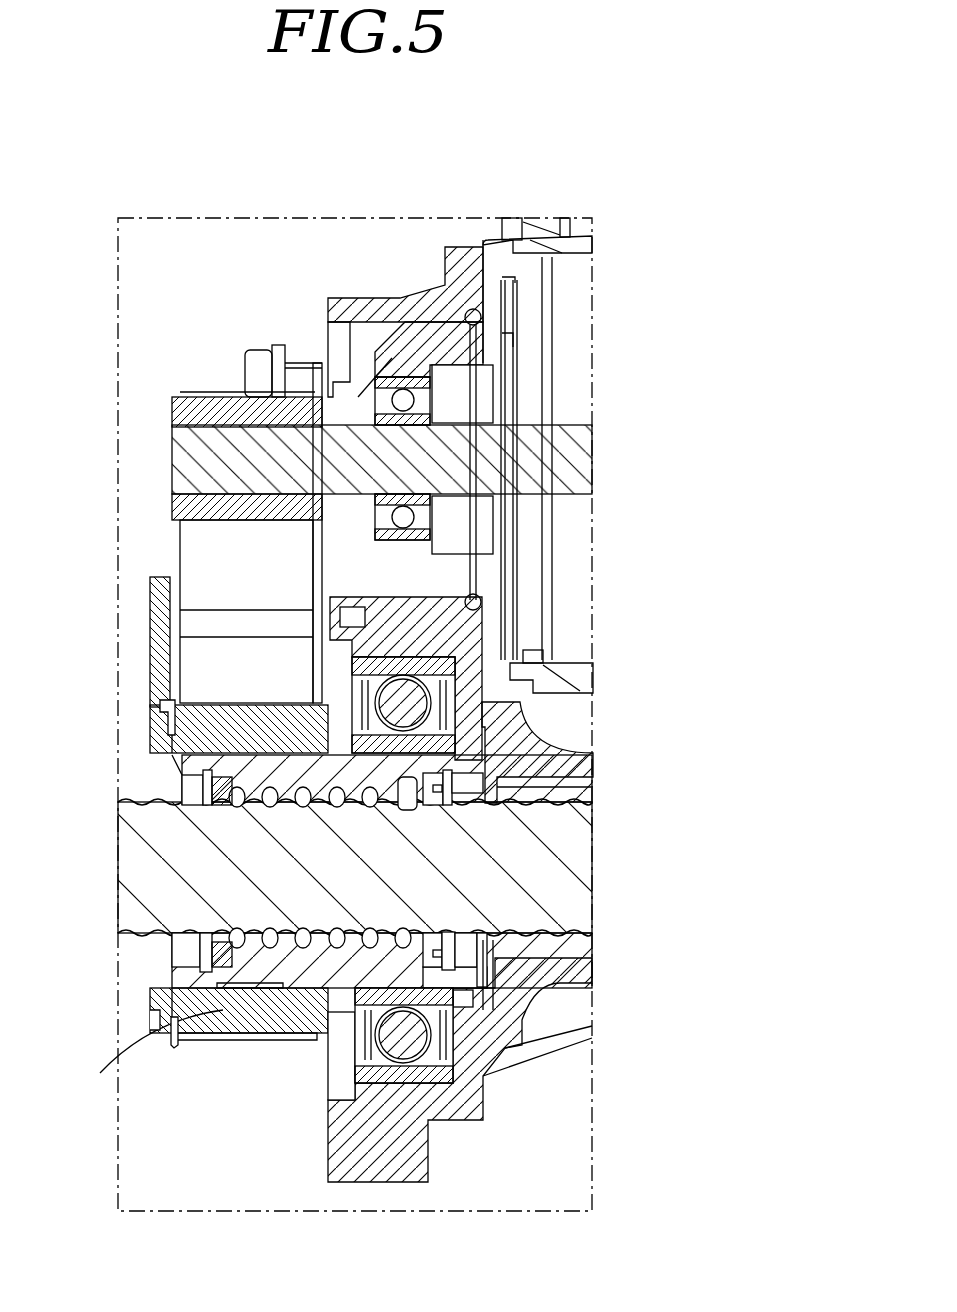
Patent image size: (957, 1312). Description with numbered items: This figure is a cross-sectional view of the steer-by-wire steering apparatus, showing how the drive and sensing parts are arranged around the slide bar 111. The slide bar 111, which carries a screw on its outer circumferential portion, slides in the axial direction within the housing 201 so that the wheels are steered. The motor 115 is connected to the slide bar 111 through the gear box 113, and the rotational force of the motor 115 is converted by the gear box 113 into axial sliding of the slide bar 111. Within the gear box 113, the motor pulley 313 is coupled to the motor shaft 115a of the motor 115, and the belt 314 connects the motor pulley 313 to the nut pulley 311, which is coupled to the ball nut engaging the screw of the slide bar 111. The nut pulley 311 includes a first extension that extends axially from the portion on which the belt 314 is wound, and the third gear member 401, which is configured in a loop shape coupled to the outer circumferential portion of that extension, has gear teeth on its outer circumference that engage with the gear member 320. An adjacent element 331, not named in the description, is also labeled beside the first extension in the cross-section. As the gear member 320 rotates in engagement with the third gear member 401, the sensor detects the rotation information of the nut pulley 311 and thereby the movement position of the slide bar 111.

The slide bar 111 is at (580, 866).
The gear box 113 is at (142, 531).
The motor 115 is at (404, 280).
The motor shaft 115a is at (585, 465).
The housing 201 is at (582, 780).
The nut pulley 311 is at (175, 1040).
The motor pulley 313 is at (176, 412).
The belt 314 is at (205, 560).
The gear member 320 is at (155, 625).
The lock nut 331 is at (155, 742).
The third gear member 401 is at (155, 713).